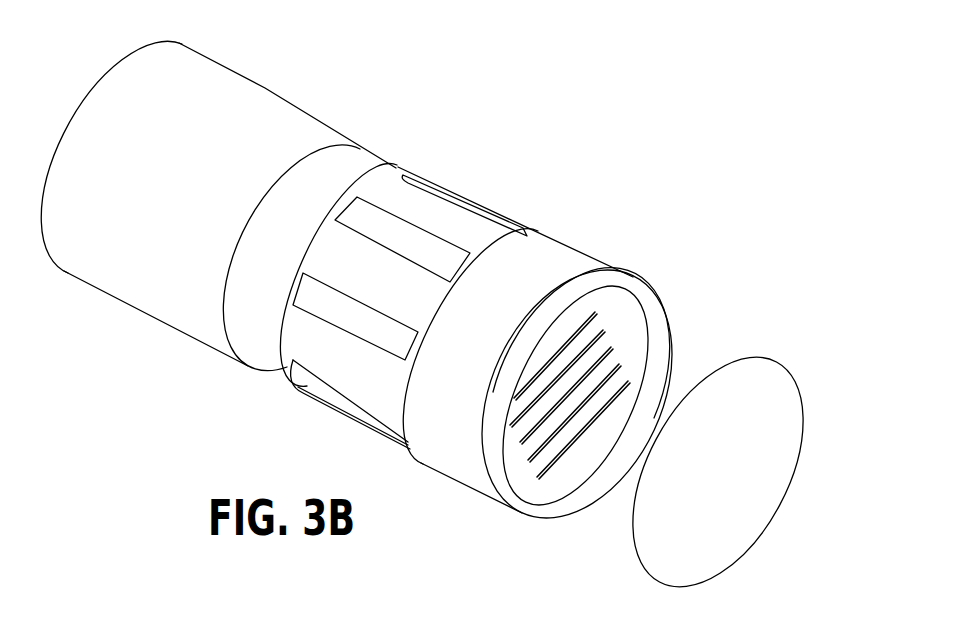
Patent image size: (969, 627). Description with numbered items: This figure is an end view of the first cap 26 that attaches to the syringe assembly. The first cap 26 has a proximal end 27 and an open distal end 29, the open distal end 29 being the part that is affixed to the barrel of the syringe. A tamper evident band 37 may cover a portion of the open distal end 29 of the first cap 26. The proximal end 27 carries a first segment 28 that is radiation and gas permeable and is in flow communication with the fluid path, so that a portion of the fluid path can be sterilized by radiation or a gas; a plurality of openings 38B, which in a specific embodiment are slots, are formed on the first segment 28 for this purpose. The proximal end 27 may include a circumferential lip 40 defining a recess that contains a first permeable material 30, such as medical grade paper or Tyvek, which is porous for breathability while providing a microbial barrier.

The first cap 26 is at (495, 113).
The proximal end 27 is at (568, 252).
The first segment 28 is at (525, 485).
The open distal end 29 is at (323, 400).
The first permeable material 30 is at (747, 515).
The tamper evident band 37 is at (263, 92).
The plurality of openings 38B is at (618, 365).
The circumferential lip 40 is at (648, 362).